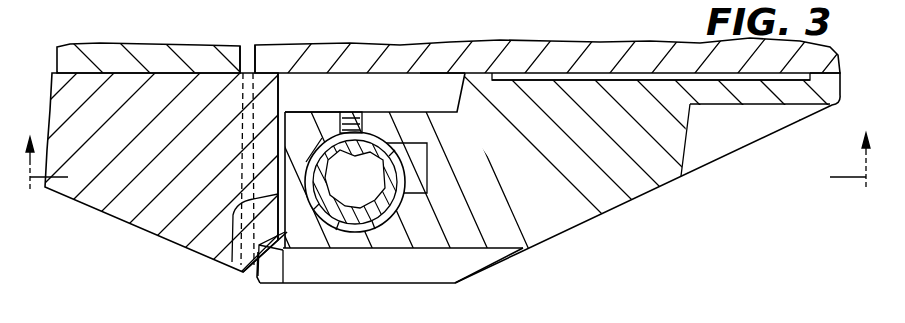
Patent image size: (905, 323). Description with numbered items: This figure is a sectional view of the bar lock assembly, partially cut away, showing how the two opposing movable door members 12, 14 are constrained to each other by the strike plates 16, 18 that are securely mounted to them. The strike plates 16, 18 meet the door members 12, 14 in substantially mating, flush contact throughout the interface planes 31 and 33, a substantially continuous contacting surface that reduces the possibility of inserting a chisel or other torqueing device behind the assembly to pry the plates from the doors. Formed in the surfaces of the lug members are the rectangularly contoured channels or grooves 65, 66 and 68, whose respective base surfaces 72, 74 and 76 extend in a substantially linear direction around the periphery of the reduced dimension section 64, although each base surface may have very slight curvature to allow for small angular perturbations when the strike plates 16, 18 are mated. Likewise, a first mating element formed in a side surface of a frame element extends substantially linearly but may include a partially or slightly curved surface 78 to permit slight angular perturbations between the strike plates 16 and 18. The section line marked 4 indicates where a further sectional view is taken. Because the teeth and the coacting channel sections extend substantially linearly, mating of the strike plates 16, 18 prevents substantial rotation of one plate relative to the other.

The door member 12 is at (204, 52).
The door member 14 is at (557, 42).
The interface plane 31 is at (232, 64).
The strike plate 16 is at (127, 226).
The strike plate 18 is at (662, 179).
The channel 65 is at (336, 82).
The interface plane 33 is at (437, 72).
The base surface 72 is at (437, 104).
The base surface 76 is at (370, 248).
The curved surface 78 is at (230, 264).
The base surface 74 is at (262, 282).
The channel 66 is at (284, 284).
The channel 68 is at (398, 262).
The reduced dimension section 64 is at (490, 249).
The section line 4- 4 is at (446, 147).